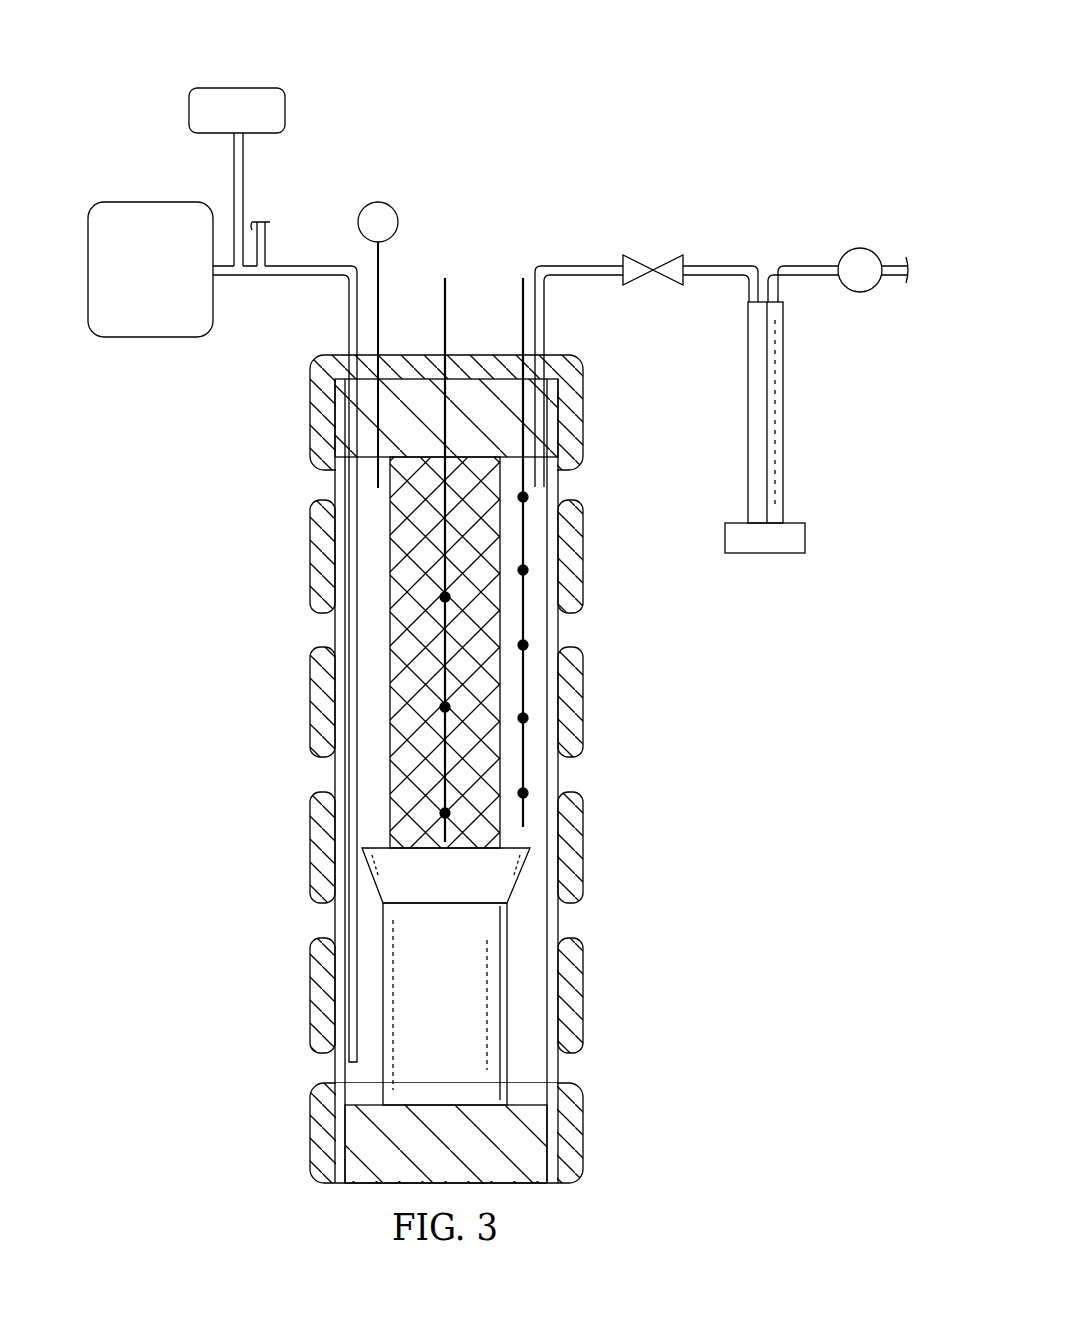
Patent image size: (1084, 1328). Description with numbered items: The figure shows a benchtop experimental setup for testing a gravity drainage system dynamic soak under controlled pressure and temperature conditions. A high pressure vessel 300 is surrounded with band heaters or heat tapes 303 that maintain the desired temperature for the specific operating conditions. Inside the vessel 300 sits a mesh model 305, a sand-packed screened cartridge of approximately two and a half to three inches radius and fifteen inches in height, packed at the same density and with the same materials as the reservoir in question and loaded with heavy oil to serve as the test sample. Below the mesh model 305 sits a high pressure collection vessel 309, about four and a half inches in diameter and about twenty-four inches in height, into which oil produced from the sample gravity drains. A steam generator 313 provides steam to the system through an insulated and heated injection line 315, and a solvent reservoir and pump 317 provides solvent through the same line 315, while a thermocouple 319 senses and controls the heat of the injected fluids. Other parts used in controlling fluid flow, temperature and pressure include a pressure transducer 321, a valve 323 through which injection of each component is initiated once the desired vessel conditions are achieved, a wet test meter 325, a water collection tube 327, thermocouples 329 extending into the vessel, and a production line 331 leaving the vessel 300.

The high pressure vessel 300 is at (563, 922).
The band heaters or heat tapes 303 is at (308, 1008).
The mesh model 305 is at (388, 745).
The high pressure collection vessel 309 is at (515, 1052).
The steam generator 313 is at (130, 200).
The insulated and heated injection line 315 is at (293, 278).
The solvent reservoir and pump 317 is at (188, 105).
The thermocouple 319 is at (270, 240).
The pressure transducer 321 is at (397, 216).
The valve 323 is at (642, 258).
The wet test meter 325 is at (875, 243).
The water collection tube 327 is at (787, 450).
The thermocouples 329 is at (450, 746).
The production line 331 is at (593, 275).